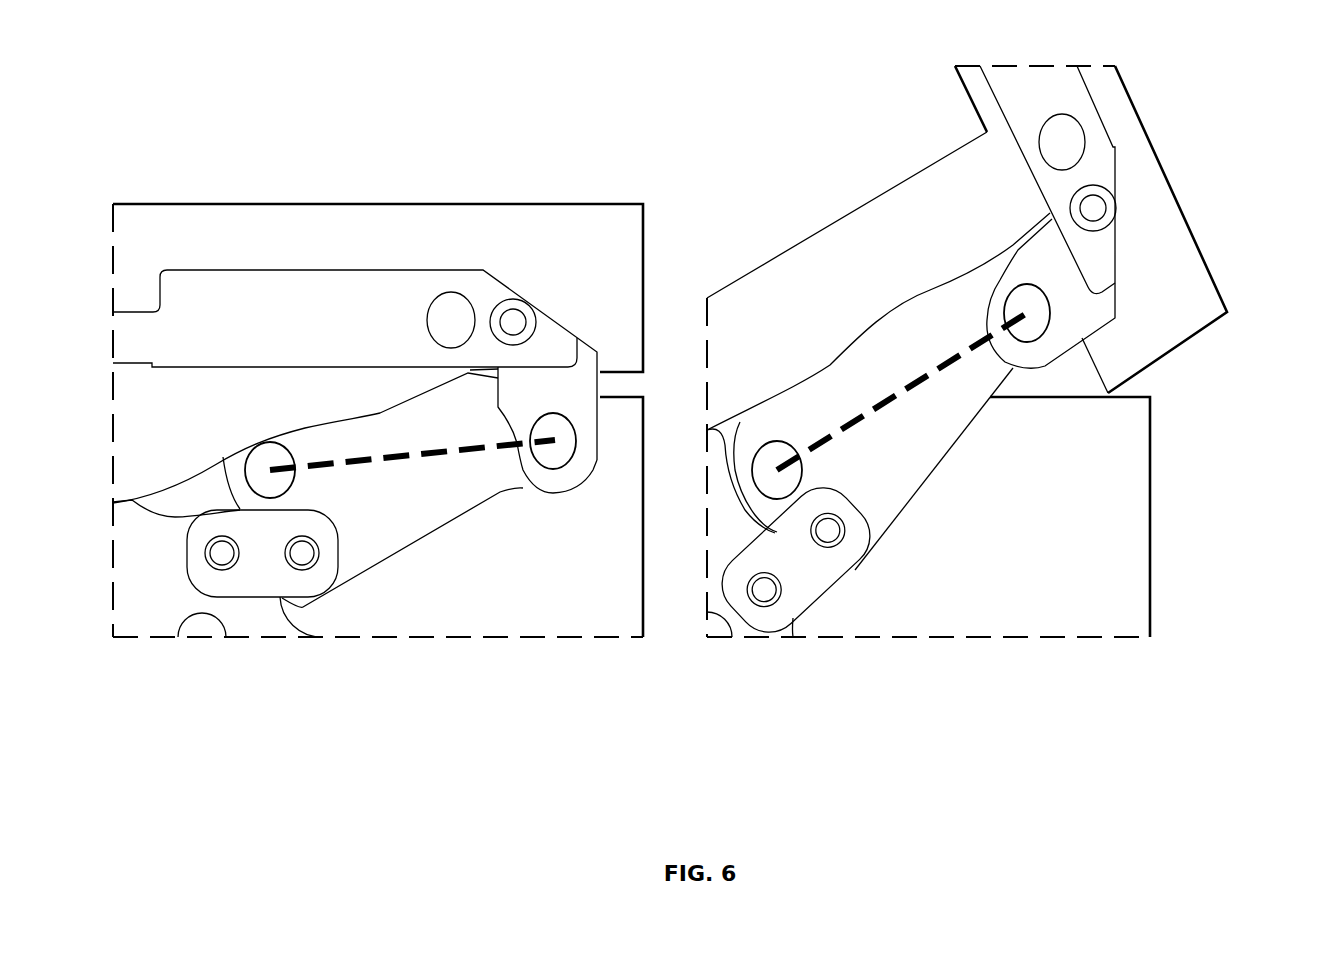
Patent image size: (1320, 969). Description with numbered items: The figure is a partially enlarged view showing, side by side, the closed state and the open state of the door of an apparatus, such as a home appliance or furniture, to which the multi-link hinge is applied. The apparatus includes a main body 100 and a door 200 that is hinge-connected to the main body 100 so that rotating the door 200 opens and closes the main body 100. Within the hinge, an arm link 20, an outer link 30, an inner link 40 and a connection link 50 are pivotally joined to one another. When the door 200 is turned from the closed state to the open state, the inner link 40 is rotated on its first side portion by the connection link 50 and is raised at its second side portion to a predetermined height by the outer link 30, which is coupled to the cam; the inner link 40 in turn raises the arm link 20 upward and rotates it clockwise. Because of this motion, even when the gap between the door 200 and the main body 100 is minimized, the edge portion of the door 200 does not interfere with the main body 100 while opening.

The arm link 20 is at (207, 327).
The outer link 30 is at (308, 410).
The inner link 40 is at (423, 423).
The connection link 50 is at (260, 573).
The main body 100 is at (562, 593).
The door 200 is at (567, 240).